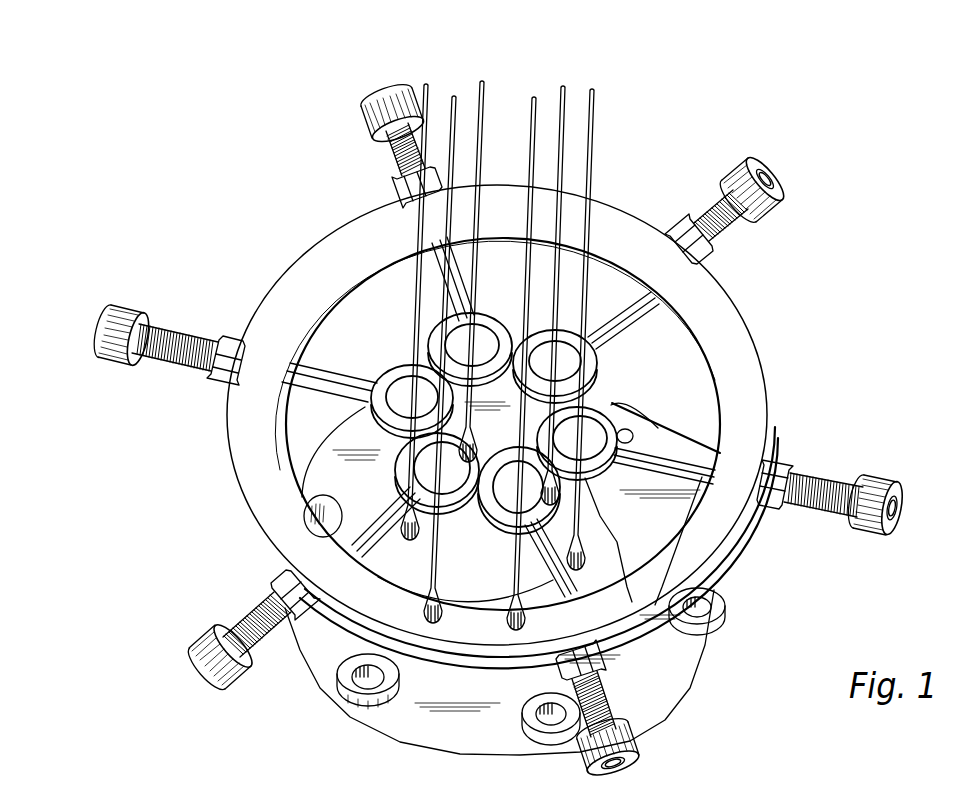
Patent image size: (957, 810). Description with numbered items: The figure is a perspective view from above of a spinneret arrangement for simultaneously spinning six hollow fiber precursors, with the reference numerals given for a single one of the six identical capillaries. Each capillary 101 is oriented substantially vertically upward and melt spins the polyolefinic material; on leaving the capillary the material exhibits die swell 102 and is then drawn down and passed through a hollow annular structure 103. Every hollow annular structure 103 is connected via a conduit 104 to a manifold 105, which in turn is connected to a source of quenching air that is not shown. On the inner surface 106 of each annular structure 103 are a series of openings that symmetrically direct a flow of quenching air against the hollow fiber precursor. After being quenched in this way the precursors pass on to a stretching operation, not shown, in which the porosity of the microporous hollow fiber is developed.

The capillary 101 is at (624, 565).
The die swell 102 is at (589, 560).
The hollow annular structure 103 is at (610, 464).
The conduit 104 is at (690, 450).
The manifold 105 is at (752, 528).
The inner surface 106 is at (594, 421).